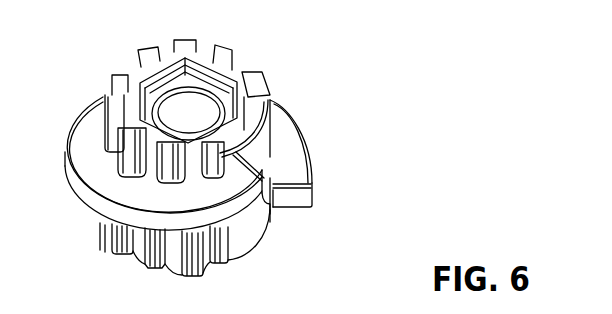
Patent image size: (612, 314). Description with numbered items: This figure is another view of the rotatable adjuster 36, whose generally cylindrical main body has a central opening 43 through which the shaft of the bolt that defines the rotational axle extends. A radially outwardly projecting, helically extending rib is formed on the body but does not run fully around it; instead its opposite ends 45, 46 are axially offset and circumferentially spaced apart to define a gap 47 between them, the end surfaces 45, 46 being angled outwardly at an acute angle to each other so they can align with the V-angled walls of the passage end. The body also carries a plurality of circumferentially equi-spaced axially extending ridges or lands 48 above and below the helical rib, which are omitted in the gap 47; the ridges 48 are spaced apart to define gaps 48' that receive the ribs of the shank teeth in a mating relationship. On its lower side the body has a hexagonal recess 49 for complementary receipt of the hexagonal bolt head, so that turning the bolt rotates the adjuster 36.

The adjuster 36 is at (333, 68).
The central opening 43 is at (155, 107).
The end of rib 45 is at (310, 194).
The end of rib 46 is at (268, 198).
The gap 47 is at (265, 135).
The ridges 48 is at (126, 95).
The gaps 48' is at (265, 82).
The hexagonal recess 49 is at (173, 128).